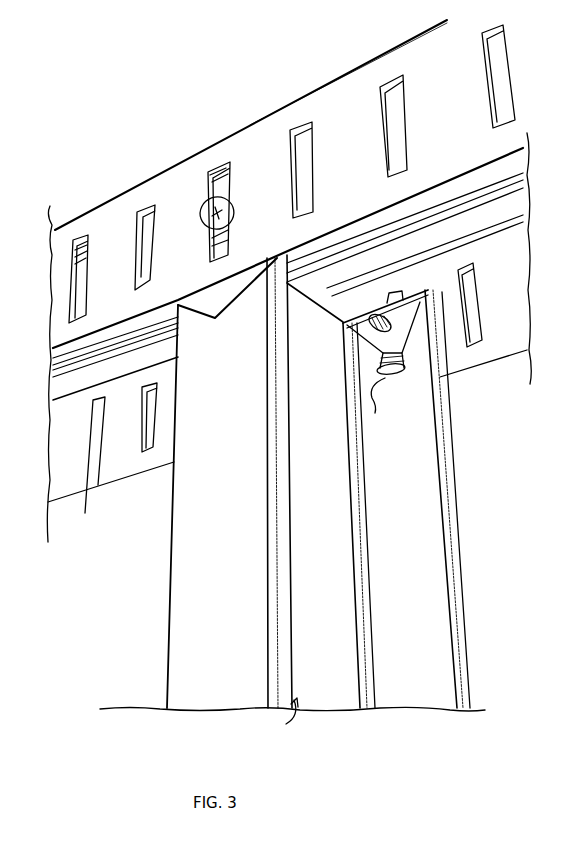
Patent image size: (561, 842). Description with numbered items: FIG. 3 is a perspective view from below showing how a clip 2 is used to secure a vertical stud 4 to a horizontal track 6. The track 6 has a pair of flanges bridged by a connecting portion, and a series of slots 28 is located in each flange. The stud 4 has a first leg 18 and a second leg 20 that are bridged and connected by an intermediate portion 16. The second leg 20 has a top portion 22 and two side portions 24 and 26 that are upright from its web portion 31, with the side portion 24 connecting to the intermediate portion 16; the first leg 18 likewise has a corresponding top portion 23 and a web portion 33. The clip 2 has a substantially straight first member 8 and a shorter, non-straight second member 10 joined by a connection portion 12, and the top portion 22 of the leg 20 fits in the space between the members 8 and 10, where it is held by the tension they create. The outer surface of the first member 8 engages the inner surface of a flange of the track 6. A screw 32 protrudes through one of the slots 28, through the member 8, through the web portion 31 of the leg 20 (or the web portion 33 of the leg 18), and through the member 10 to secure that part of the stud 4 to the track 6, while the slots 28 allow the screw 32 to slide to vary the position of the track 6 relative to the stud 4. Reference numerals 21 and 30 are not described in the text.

The clip 2 is at (410, 367).
The stud 4 is at (168, 583).
The track 6 is at (75, 214).
The first member 8 is at (203, 320).
The second member 10 is at (375, 410).
The connection portion 12 is at (436, 290).
The intermediate portion 16 is at (313, 481).
The first leg 18 is at (217, 643).
The second leg 20 is at (437, 675).
The column 21 is at (187, 516).
The top portion 22 is at (367, 318).
The top portion 23 is at (209, 197).
The side portion 24 is at (357, 507).
The side portion 26 is at (445, 500).
The slots 28 is at (380, 86).
The wall section 30 is at (111, 373).
The web portion 31 is at (407, 568).
The screw 32 is at (201, 208).
The web portion 33 is at (280, 720).